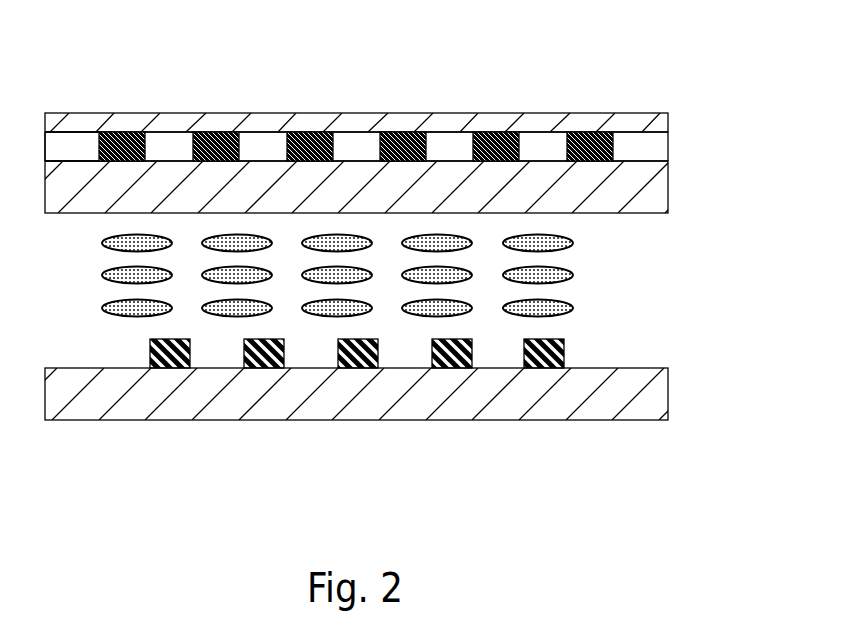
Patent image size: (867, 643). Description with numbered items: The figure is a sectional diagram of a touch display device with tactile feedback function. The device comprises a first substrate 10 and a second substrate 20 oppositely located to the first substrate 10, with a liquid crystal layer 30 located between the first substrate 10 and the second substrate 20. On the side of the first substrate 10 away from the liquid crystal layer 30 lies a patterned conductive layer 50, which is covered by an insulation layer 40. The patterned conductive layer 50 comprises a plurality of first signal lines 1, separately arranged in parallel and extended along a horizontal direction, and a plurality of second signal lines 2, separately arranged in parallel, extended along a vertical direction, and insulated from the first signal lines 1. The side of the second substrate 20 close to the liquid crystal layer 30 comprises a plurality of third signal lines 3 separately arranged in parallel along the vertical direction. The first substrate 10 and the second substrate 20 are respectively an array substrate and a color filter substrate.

The patterned conductive layer 50 is at (207, 50).
The first signal lines 1 is at (78, 152).
The second signal lines 2 is at (222, 132).
The insulation layer 40 is at (627, 123).
The first substrate 10 is at (627, 187).
The liquid crystal layer 30 is at (538, 275).
The third signal lines 3 is at (163, 368).
The second substrate 20 is at (623, 398).